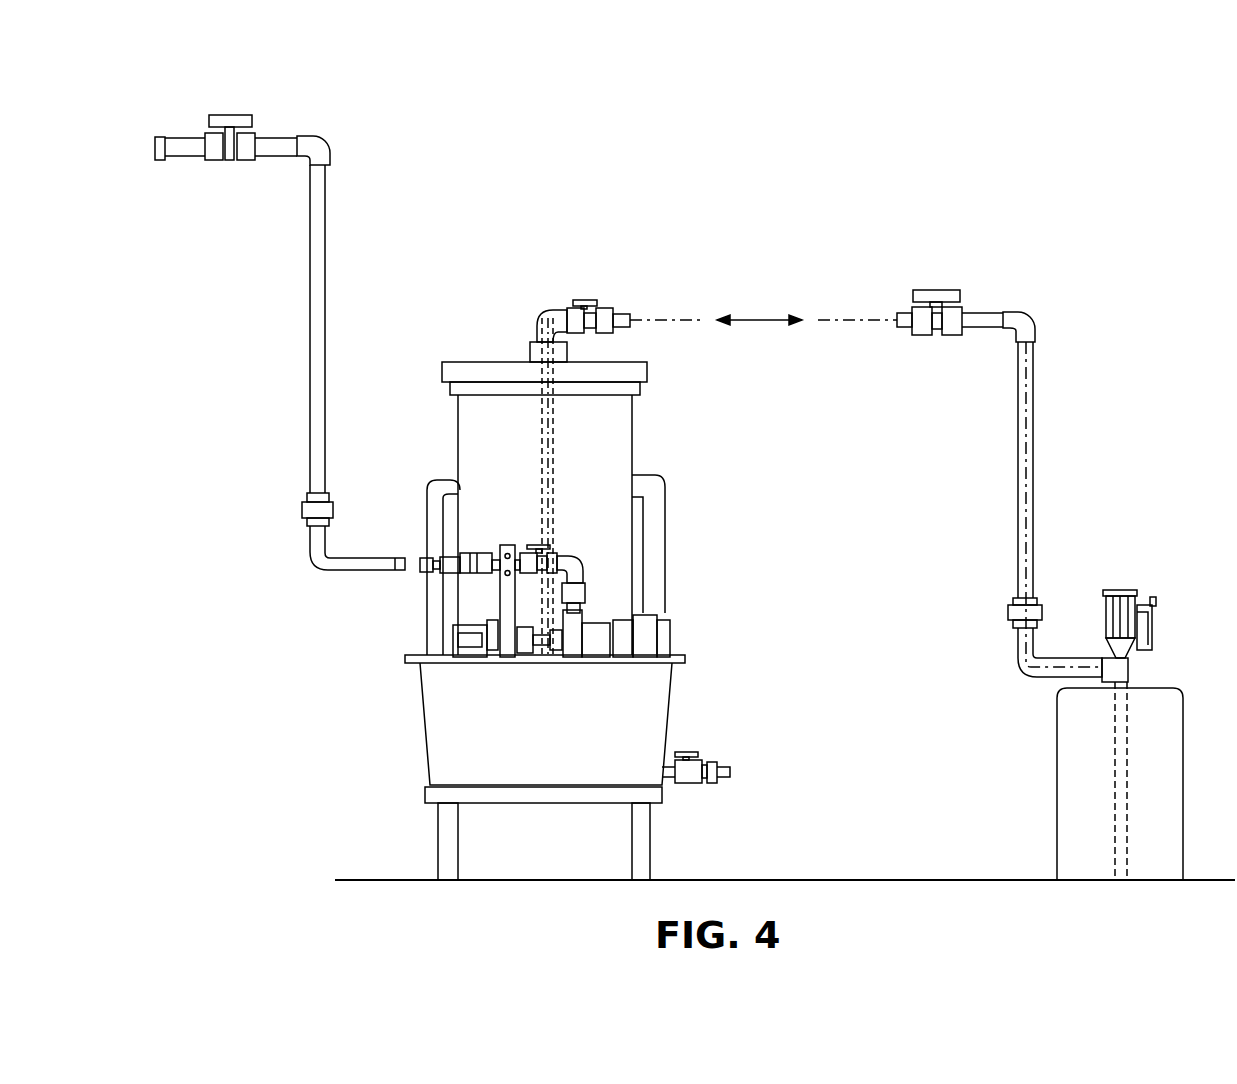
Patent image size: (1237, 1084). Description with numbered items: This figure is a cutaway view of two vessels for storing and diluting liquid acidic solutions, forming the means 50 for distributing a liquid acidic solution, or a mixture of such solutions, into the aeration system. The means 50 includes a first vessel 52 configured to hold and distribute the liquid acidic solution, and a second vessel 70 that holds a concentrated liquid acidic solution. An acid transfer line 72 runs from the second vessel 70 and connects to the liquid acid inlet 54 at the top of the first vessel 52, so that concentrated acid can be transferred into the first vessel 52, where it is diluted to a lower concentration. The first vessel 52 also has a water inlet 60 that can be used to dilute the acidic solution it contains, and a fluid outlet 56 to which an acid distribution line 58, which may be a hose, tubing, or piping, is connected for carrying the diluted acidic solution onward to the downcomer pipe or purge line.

The means for distributing a liquid acidic solution 50 is at (987, 131).
The first vessel 52 is at (617, 425).
The liquid acid inlet 54 is at (587, 298).
The fluid outlet 56 is at (450, 570).
The acid distribution line 58 is at (317, 243).
The water inlet 60 is at (705, 762).
The second vessel 70 is at (1173, 715).
The acid transfer line 72 is at (1032, 438).